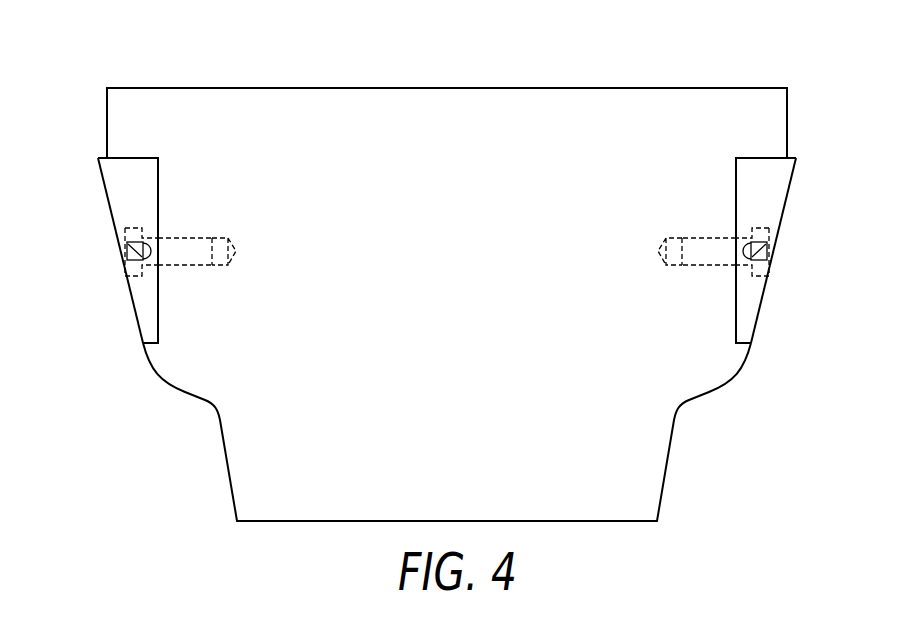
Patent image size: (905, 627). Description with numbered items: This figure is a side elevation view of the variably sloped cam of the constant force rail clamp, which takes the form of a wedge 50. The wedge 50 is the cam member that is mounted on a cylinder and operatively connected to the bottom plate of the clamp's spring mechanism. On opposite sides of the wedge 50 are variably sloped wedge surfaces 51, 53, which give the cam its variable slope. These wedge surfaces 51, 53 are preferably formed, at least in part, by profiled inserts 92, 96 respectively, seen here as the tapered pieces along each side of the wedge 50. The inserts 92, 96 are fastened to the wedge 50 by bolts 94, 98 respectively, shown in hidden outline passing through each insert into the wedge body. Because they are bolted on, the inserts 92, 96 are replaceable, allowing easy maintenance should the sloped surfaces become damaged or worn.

The wedge 50 is at (537, 125).
The variably sloped wedge surface 51 is at (106, 194).
The variably sloped wedge surface 53 is at (788, 194).
The profiled insert 92 is at (143, 295).
The profiled insert 96 is at (751, 295).
The bolt 94 is at (145, 250).
The bolt 98 is at (749, 250).